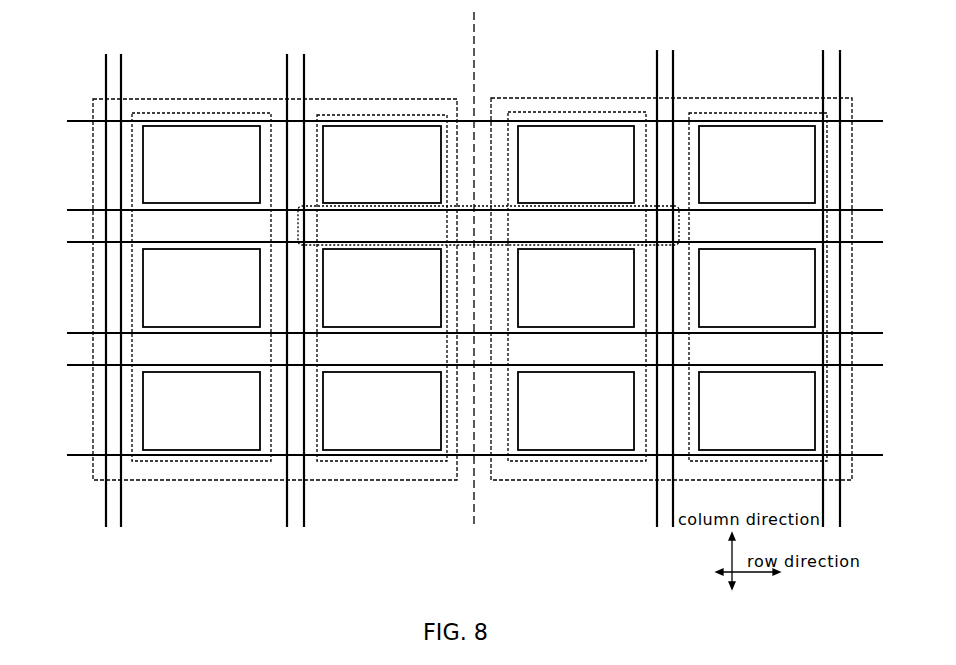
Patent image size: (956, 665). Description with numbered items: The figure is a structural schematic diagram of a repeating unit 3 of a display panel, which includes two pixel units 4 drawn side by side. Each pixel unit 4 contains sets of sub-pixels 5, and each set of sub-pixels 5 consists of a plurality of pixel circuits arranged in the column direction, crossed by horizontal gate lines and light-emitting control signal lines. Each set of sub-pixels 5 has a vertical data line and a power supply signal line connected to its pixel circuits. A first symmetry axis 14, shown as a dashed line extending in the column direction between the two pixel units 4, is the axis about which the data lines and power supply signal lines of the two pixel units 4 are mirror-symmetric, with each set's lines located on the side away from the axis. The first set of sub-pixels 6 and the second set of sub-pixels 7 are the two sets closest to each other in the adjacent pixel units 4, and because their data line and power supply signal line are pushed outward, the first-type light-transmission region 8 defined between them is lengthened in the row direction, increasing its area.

The repeating unit 3 is at (30, 58).
The pixel unit 4 is at (387, 99).
The set of sub-pixels 5 is at (198, 113).
The first set of sub-pixels 6 is at (337, 115).
The second set of sub-pixels 7 is at (570, 112).
The first-type light-transmission region 8 is at (681, 227).
The first symmetry axis 14 is at (474, 47).